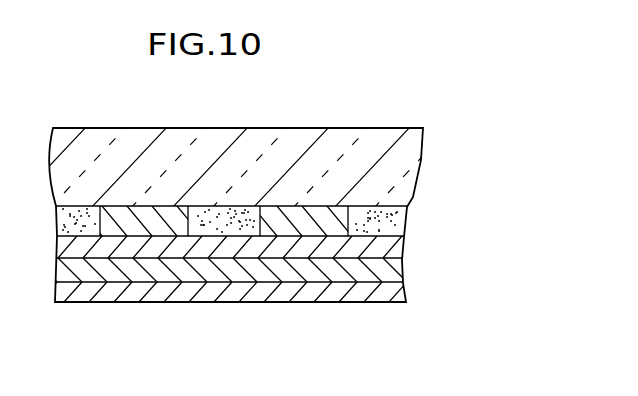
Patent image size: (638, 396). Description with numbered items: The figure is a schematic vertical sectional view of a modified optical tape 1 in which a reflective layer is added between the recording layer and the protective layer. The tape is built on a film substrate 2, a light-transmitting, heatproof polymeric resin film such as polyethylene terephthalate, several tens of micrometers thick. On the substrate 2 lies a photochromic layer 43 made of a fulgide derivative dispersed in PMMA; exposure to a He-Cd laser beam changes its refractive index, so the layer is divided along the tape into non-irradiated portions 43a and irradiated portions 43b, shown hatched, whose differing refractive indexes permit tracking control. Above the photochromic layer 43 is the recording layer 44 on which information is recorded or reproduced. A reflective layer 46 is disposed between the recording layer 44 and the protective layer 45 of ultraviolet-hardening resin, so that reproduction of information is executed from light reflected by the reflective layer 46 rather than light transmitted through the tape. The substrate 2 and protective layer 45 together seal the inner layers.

The optical tape 1 is at (150, 320).
The film substrate 2 is at (415, 165).
The photochromic layer 43 is at (393, 228).
The non-irradiated portion 43a is at (82, 217).
The irradiated portion 43b is at (150, 217).
The recording layer 44 is at (392, 252).
The reflective layer 46 is at (400, 273).
The protective layer 45 is at (400, 297).